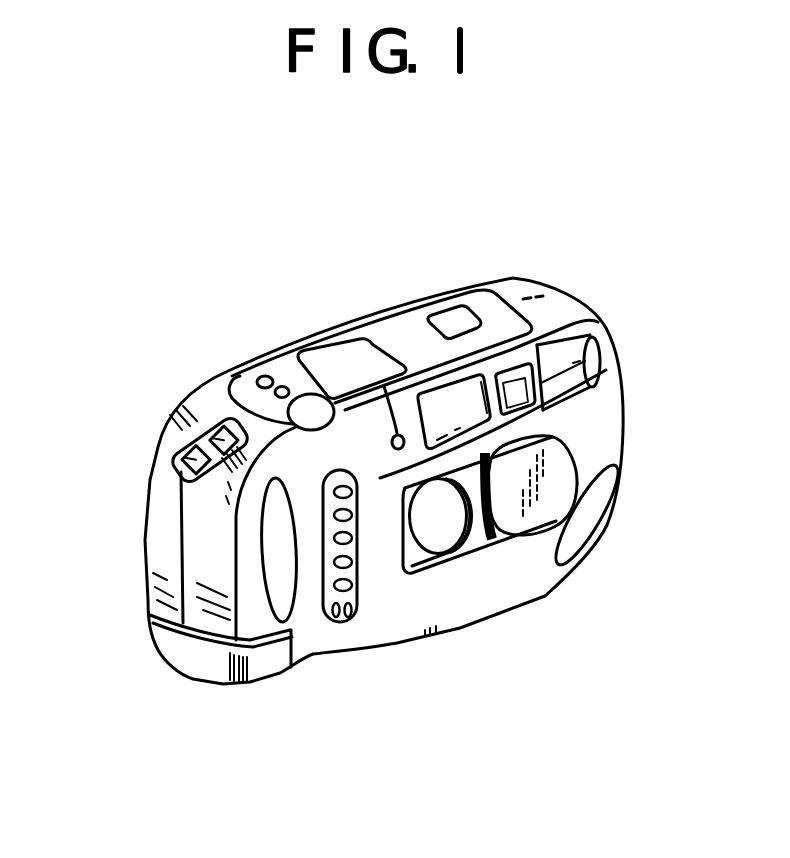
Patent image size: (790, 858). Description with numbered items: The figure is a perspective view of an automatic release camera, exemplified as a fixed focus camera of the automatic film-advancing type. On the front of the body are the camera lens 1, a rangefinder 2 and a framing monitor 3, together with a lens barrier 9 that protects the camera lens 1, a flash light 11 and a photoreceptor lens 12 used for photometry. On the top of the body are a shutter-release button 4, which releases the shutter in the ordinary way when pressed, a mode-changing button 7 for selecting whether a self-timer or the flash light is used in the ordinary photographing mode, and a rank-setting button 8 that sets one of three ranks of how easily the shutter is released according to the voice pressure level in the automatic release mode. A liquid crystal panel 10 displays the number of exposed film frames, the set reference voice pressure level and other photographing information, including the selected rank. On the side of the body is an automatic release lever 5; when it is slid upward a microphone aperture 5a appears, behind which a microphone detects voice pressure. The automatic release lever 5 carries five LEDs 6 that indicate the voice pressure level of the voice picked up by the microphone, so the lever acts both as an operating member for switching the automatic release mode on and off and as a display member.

The camera lens 1 is at (442, 535).
The rangefinder 2 is at (438, 401).
The framing monitor 3 is at (507, 383).
The shutter-release button 4 is at (267, 378).
The automatic release lever 5 is at (357, 573).
The microphone aperture 5a is at (333, 620).
The LEDs 6 is at (333, 585).
The mode-changing button 7 is at (256, 366).
The rank-setting button 8 is at (243, 363).
The lens barrier 9 is at (533, 503).
The liquid crystal panel 10 is at (304, 405).
The flash light 11 is at (590, 348).
The photoreceptor lens 12 is at (318, 366).